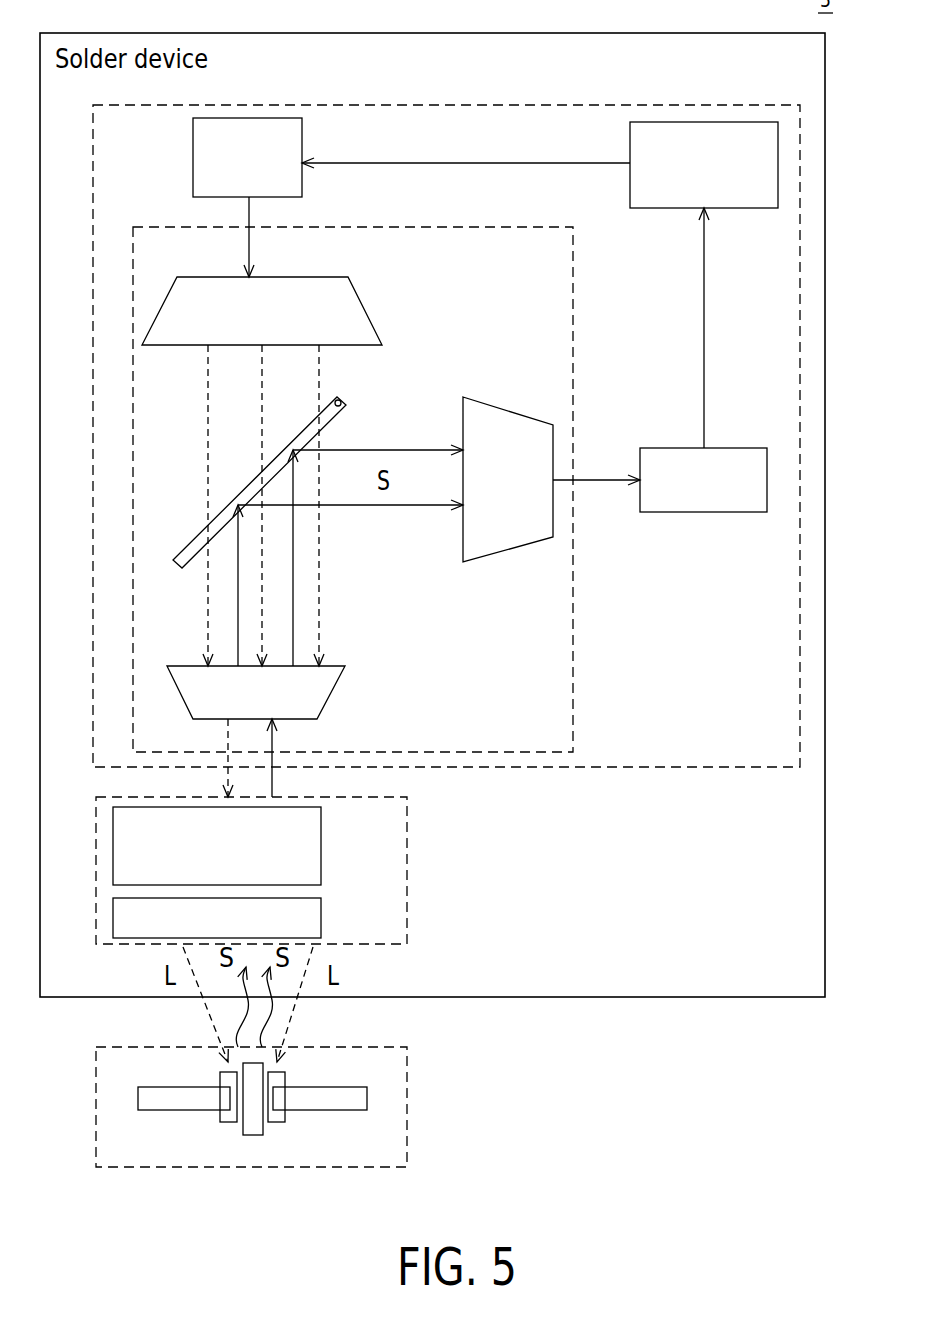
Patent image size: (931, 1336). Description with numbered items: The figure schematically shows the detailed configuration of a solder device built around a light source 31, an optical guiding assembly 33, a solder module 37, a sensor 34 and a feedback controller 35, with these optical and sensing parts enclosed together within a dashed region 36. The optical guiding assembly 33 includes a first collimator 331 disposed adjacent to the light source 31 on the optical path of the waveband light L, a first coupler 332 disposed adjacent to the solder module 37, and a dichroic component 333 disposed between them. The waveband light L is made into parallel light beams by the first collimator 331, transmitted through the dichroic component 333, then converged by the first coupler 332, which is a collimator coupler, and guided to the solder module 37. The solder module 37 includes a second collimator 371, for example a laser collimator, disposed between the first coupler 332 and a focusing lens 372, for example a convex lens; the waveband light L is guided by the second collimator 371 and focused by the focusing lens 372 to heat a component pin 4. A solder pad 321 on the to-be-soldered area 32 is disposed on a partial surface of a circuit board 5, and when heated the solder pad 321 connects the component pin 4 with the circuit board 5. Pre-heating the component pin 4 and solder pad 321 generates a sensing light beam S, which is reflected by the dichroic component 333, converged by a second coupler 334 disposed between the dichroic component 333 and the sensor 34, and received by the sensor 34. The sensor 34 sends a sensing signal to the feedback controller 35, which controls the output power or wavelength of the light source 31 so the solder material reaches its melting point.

The light source 31 is at (193, 163).
The to-be-soldered area 32 is at (295, 1127).
The optical guiding assembly 33 is at (488, 223).
The first collimator 331 is at (363, 318).
The first coupler 332 is at (330, 690).
The dichroic component 333 is at (343, 400).
The second coupler 334 is at (510, 413).
The sensor 34 is at (704, 512).
The feedback controller 35 is at (630, 146).
The optical processing unit 36 is at (706, 767).
The solder module 37 is at (293, 870).
The second collimator 371 is at (321, 830).
The focusing lens 372 is at (321, 920).
The component pin 4 is at (253, 1080).
The circuit board 5 is at (333, 1100).
The solder pad 321 is at (228, 1122).